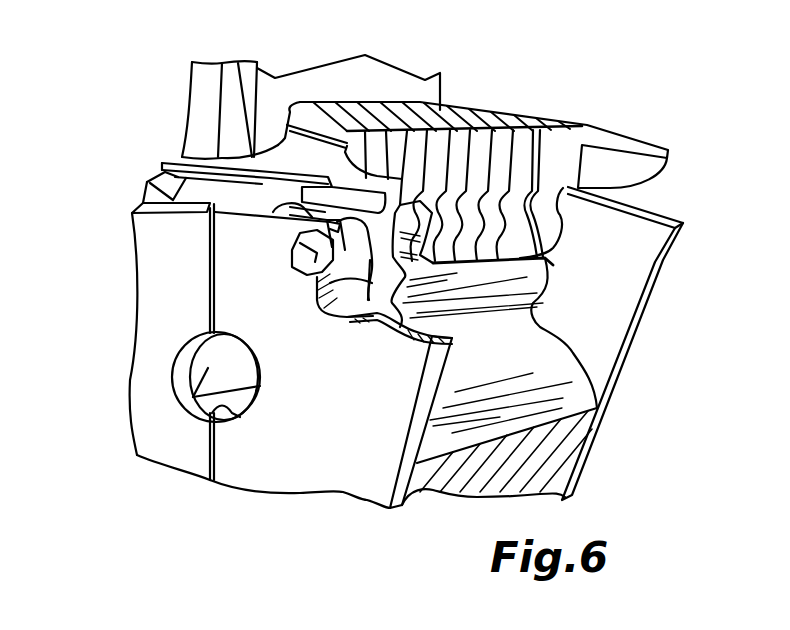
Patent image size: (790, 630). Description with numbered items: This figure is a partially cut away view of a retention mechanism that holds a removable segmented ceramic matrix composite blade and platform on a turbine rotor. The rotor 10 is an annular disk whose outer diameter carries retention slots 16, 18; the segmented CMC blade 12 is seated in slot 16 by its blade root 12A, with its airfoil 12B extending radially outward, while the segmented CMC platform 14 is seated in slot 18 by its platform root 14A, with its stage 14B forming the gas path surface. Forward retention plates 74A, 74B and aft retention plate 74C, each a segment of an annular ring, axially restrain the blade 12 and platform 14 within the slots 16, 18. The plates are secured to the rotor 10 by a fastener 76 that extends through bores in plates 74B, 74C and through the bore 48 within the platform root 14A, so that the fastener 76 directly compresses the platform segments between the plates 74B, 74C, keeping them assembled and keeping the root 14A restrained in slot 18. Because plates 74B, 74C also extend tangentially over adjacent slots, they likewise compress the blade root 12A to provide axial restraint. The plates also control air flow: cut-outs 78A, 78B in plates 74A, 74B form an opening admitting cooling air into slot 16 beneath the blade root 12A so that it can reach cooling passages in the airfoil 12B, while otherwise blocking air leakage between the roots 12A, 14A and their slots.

The rotor 10 is at (537, 453).
The segmented CMC blade 12 is at (202, 86).
The blade root 12A is at (197, 186).
The airfoil 12B is at (257, 87).
The segmented CMC platform 14 is at (578, 133).
The platform root 14A is at (552, 230).
The stage 14B is at (460, 122).
The retention slot 16 is at (533, 377).
The retention slot 18 is at (345, 323).
The bore 48 is at (376, 322).
The forward retention plate 74A is at (148, 243).
The forward retention plate 74B is at (283, 460).
The aft retention plate 74C is at (632, 270).
The fastener 76 is at (290, 248).
The cut-out 78A is at (187, 363).
The cut-out 78B is at (211, 413).